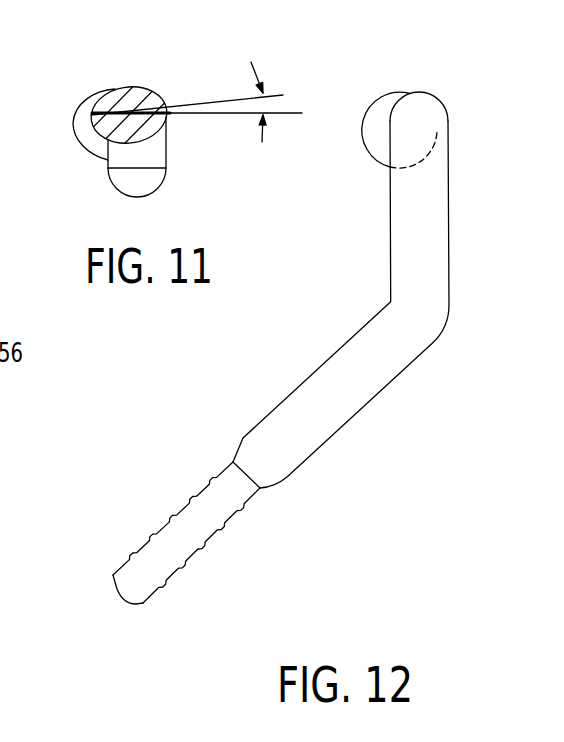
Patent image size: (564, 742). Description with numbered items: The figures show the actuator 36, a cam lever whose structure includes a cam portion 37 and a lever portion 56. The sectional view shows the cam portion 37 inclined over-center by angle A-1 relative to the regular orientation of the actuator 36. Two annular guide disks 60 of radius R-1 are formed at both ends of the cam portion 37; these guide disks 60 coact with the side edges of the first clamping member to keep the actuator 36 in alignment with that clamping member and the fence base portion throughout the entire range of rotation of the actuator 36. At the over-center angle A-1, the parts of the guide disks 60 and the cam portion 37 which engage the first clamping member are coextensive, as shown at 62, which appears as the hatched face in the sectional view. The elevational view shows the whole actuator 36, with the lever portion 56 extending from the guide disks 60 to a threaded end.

In FIG. 12, the actuator 36 is at (348, 422).
In FIG. 11, the cam portion 37 is at (105, 122).
In FIG. 12, the lever portion 56 is at (292, 392).
In FIG. 11, the annular guide disks 60 is at (76, 121).
In FIG. 12, the annular guide disks 60 is at (374, 160).
In FIG. 11, the coextensive engaging portion 62 is at (145, 88).
In FIG. 11, the radius of guide disks R-1 is at (98, 150).
In FIG. 11, the over-center angle A-1 is at (204, 102).